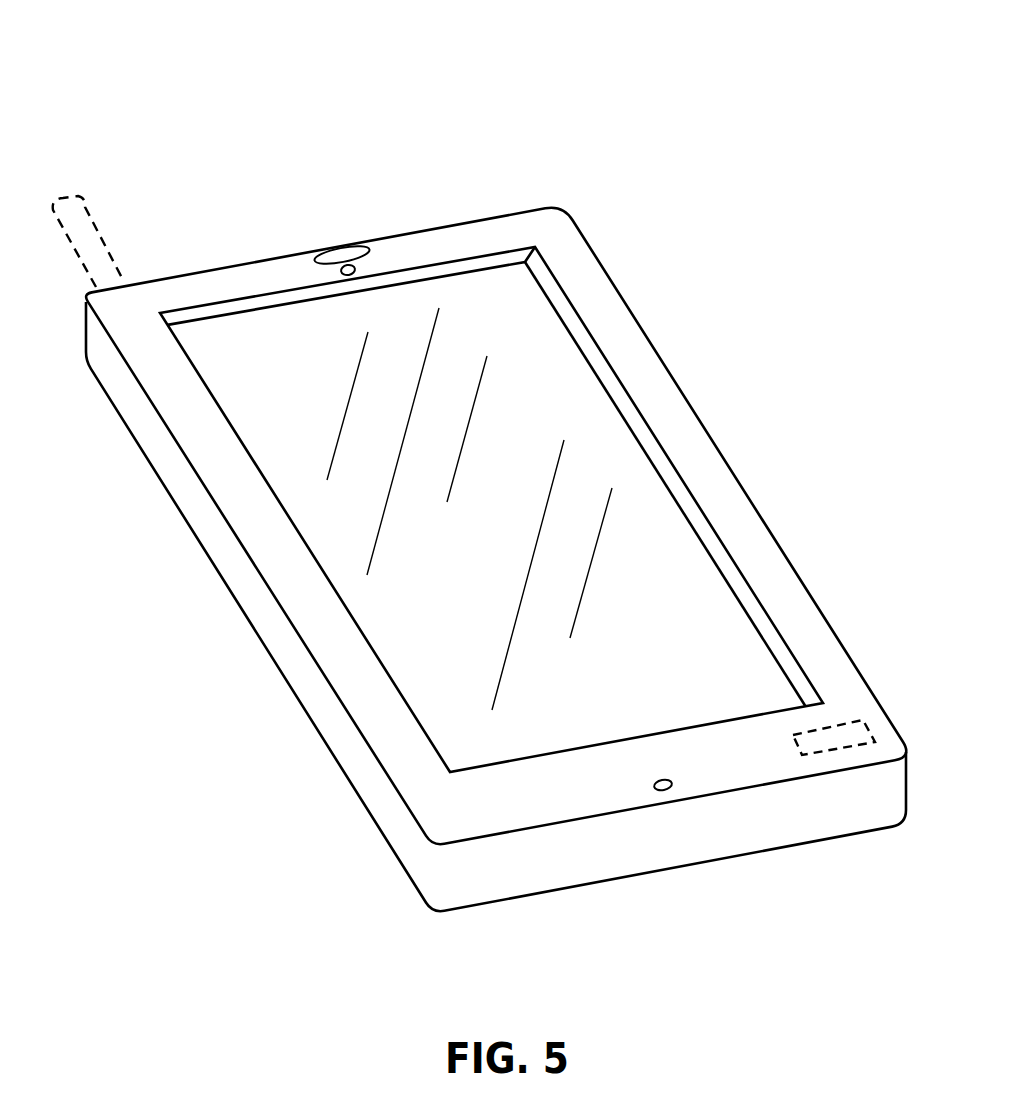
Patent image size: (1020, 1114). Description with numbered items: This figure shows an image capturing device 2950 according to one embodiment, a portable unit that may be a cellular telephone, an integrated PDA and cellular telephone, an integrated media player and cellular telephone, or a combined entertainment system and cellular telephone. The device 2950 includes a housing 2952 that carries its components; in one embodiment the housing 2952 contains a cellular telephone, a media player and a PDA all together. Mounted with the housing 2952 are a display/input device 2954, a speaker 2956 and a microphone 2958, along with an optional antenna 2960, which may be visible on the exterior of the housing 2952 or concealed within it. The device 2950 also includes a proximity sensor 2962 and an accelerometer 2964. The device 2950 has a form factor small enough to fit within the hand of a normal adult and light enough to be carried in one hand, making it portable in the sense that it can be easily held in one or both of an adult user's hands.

The image capturing device 2950 is at (668, 105).
The housing 2952 is at (632, 315).
The display/input device 2954 is at (520, 480).
The speaker 2956 is at (344, 256).
The proximity sensor 2962 is at (357, 268).
The microphone 2958 is at (663, 790).
The antenna 2960 is at (67, 203).
The accelerometer 2964 is at (838, 738).